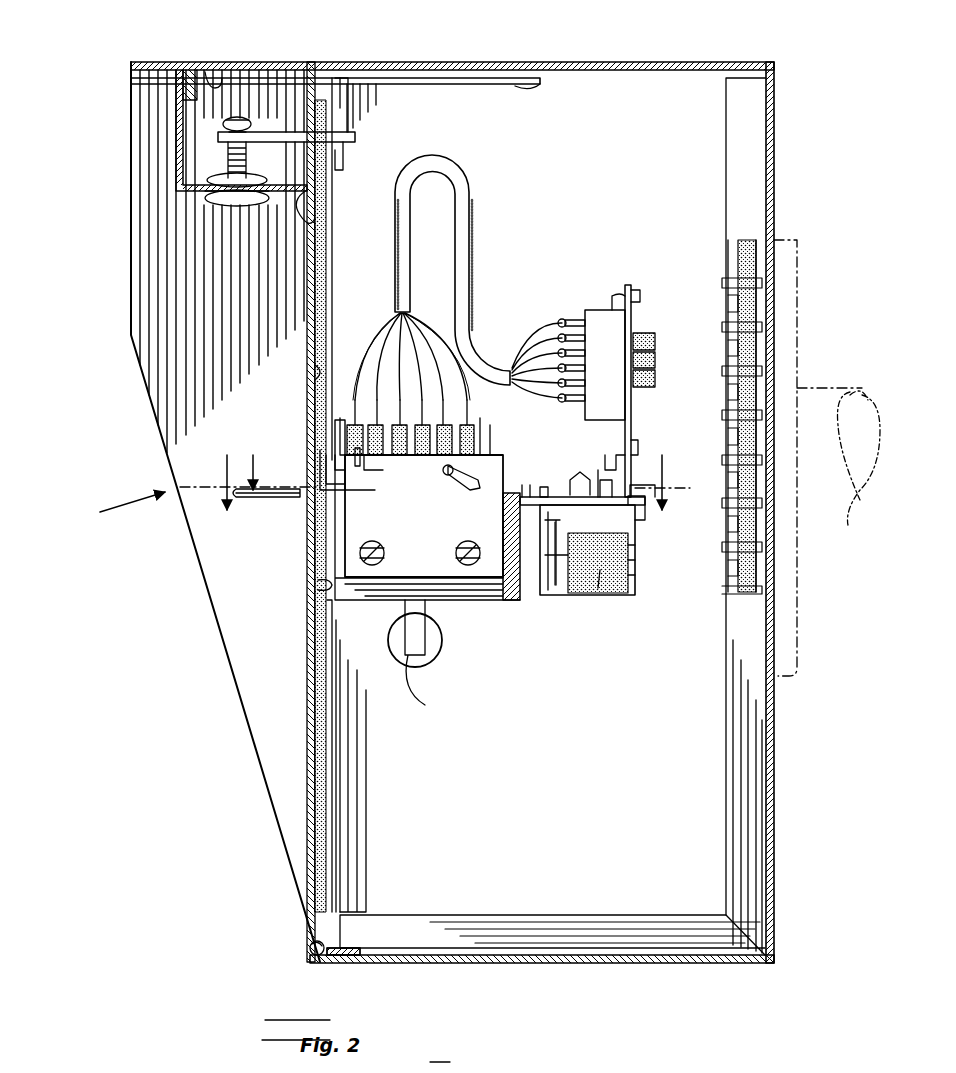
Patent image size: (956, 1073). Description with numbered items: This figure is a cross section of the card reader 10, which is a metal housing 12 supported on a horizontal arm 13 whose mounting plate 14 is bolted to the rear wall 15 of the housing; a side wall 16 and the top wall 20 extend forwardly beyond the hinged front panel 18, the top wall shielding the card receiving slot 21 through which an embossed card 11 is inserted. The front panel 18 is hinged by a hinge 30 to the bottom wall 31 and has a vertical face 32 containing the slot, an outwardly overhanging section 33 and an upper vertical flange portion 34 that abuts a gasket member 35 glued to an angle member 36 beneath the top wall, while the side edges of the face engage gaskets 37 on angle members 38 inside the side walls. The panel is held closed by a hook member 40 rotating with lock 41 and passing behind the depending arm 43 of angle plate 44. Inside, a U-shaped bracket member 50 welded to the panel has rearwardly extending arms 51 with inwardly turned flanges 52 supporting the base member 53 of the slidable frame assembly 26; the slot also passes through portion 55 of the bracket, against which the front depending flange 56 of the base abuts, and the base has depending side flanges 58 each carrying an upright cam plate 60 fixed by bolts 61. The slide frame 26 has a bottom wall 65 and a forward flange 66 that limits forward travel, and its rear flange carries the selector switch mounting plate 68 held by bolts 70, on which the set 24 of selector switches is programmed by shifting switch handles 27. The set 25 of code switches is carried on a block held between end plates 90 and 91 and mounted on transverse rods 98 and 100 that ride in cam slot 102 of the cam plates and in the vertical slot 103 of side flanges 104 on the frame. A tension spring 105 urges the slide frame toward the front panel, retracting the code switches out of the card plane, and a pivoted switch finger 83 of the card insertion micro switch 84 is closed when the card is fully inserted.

The reader 10 is at (119, 508).
The card 11 is at (254, 461).
The metal housing 12 is at (178, 372).
The horizontal arm 13 is at (836, 385).
The mounting plate 14 is at (800, 265).
The rear wall 15 is at (778, 178).
The side wall 16 is at (258, 750).
The front panel 18 is at (304, 613).
The top wall 20 is at (356, 62).
The card receiving slot 21 is at (306, 496).
The set of selector switches 24 is at (600, 306).
The set of code switches 25 is at (340, 407).
The slidable frame assembly 26 is at (600, 470).
The switch handle 27 is at (640, 334).
The hinge 30 is at (320, 962).
The bottom wall 31 is at (470, 963).
The vertical face 32 is at (310, 700).
The overhanging section 33 is at (316, 222).
The upper vertical flange portion 34 is at (176, 135).
The gasket member 35 is at (188, 76).
The angle member 36 is at (215, 84).
The gasket 37 is at (340, 750).
The angle member 38 is at (350, 832).
The hook member 40 is at (356, 137).
The lock 41 is at (230, 162).
The depending arm 43 is at (320, 97).
The angle plate 44 is at (508, 82).
The U-shaped bracket member 50 is at (348, 372).
The rearwardly extending arm 51 is at (508, 435).
The inwardly turned flange 52 is at (636, 522).
The base member 53 is at (466, 592).
The portion of bracket 55 is at (316, 372).
The front depending flange 56 is at (318, 585).
The depending side flange 58 is at (512, 592).
The cam plate 60 is at (506, 475).
The bolt 61 is at (372, 566).
The bottom wall of slide frame 65 is at (578, 485).
The forward flange 66 is at (320, 468).
The selector switch mounting plate 68 is at (632, 405).
The bolt 70 is at (650, 484).
The pivoted switch finger 83 is at (553, 584).
The card insertion micro switch 84 is at (600, 592).
The end plate 90 is at (490, 422).
The end plate 91 is at (336, 430).
The transverse rod 98 is at (362, 457).
The transverse rod 100 is at (448, 477).
The cam slot 102 is at (476, 492).
The vertical slot 103 is at (375, 480).
The side flange 104 is at (402, 472).
The tension spring 105 is at (526, 495).